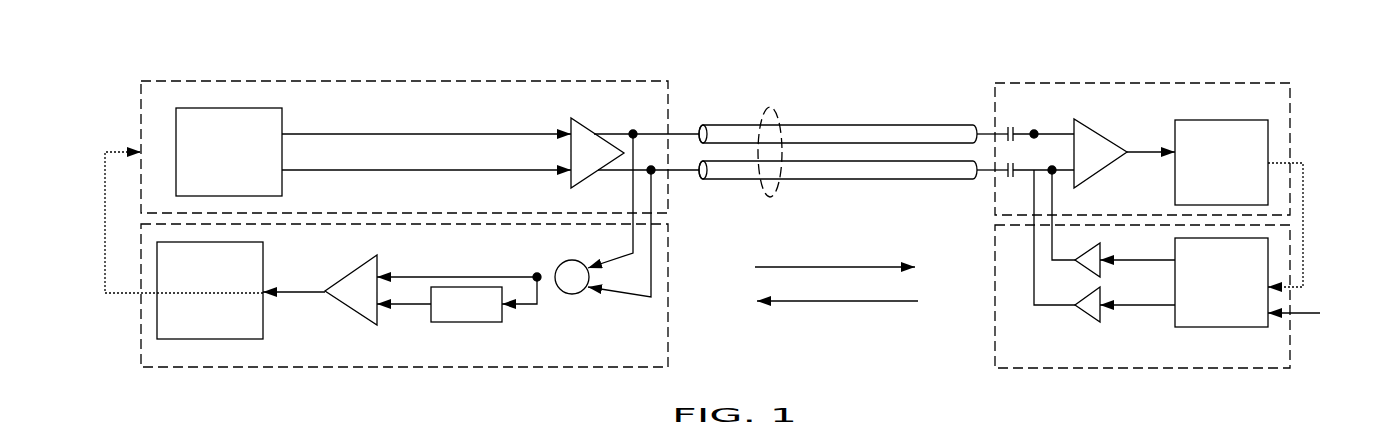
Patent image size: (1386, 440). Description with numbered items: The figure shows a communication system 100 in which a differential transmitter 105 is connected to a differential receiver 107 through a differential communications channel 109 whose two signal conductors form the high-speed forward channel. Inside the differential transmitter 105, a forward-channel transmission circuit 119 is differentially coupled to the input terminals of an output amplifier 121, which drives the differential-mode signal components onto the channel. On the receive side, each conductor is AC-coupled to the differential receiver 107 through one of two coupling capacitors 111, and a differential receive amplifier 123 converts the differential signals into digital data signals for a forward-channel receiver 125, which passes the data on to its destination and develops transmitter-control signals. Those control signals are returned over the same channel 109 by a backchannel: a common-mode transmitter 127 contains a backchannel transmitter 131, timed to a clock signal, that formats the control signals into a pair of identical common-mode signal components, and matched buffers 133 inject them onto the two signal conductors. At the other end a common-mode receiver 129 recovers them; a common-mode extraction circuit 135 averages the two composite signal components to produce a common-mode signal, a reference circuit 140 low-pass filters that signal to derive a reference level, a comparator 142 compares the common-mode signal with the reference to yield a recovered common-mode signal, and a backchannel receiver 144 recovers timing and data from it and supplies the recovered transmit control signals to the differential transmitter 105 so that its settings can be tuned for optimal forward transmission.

The communication system 100 is at (952, 55).
The differential transmitter 105 is at (472, 108).
The differential receiver 107 is at (1208, 110).
The differential communications channel 109 is at (772, 110).
The coupling capacitors 111 is at (1011, 127).
The forward-channel transmission circuit 119 is at (212, 189).
The output amplifier 121 is at (590, 119).
The differential receive amplifier 123 is at (1093, 172).
The forward-channel receiver 125 is at (1204, 198).
The common-mode transmitter 127 is at (1115, 359).
The common-mode receiver 129 is at (663, 359).
The backchannel transmitter 131 is at (1204, 322).
The matched buffers 133 is at (1087, 290).
The common-mode extraction circuit 135 is at (566, 261).
The reference circuit 140 is at (470, 323).
The comparator 142 is at (353, 309).
The backchannel receiver 144 is at (193, 327).